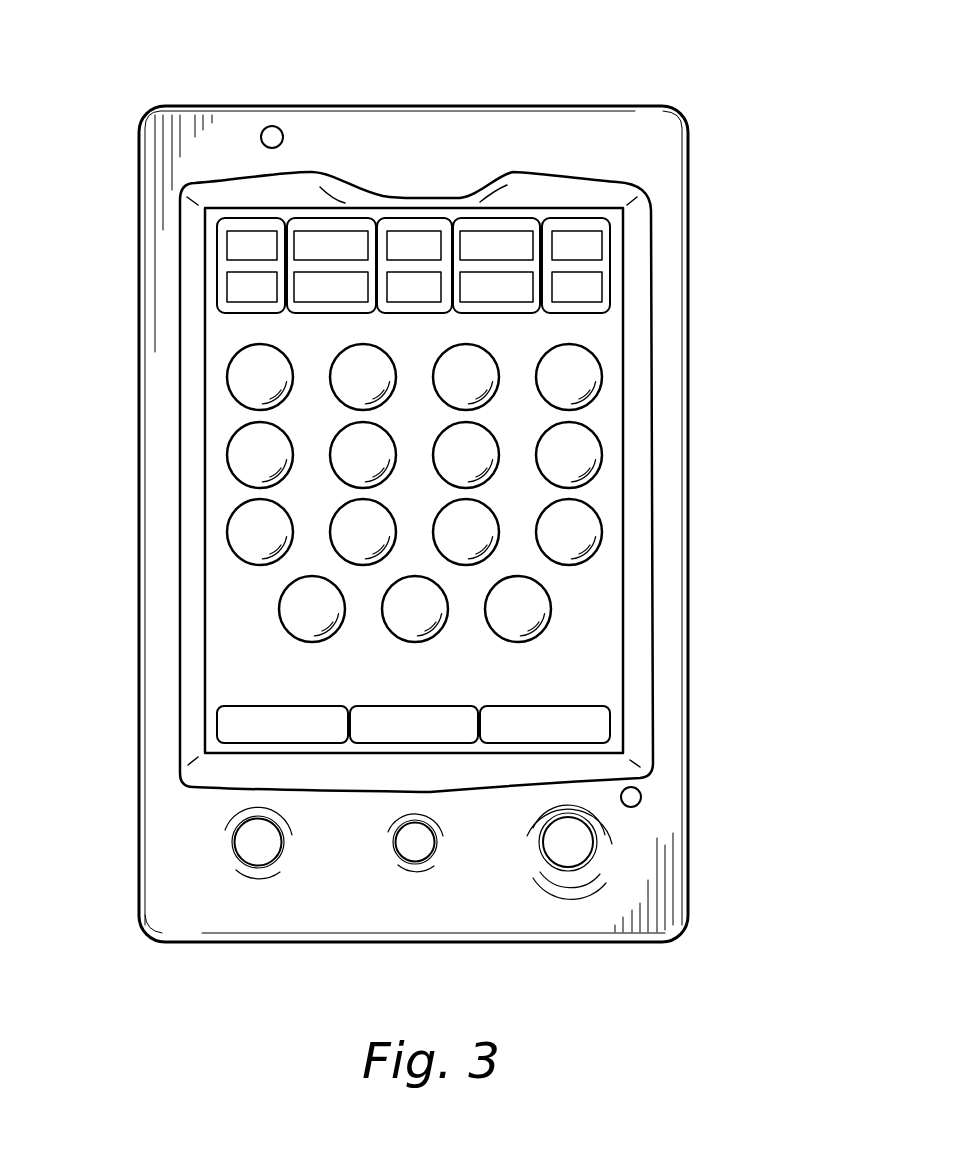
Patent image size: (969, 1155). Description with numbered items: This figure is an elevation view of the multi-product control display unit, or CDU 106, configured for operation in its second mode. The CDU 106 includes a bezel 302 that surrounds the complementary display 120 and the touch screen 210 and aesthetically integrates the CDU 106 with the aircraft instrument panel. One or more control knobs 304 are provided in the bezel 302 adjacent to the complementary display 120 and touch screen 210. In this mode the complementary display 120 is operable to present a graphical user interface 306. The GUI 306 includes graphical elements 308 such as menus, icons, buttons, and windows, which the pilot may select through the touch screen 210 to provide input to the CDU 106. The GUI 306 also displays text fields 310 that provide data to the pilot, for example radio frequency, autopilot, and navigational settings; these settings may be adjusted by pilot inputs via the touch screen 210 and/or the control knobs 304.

The CDU 106 is at (753, 80).
The bezel 302 is at (675, 151).
The graphical user interface 306 is at (243, 238).
The text fields 310 is at (422, 238).
The graphical elements 308 is at (233, 373).
The complementary display 120 is at (243, 751).
The touch screen 210 is at (293, 748).
The control knobs 304 is at (563, 853).